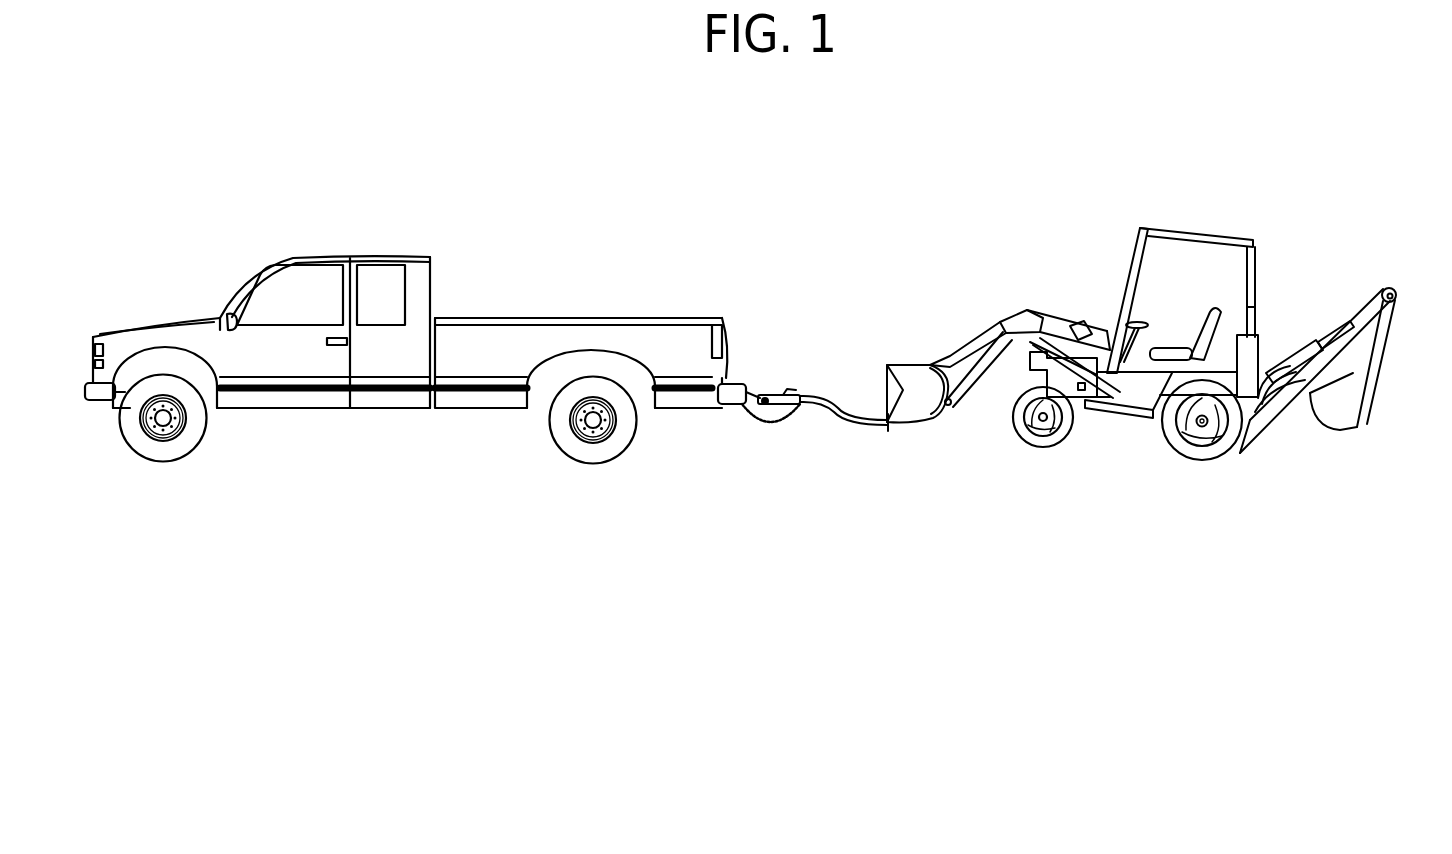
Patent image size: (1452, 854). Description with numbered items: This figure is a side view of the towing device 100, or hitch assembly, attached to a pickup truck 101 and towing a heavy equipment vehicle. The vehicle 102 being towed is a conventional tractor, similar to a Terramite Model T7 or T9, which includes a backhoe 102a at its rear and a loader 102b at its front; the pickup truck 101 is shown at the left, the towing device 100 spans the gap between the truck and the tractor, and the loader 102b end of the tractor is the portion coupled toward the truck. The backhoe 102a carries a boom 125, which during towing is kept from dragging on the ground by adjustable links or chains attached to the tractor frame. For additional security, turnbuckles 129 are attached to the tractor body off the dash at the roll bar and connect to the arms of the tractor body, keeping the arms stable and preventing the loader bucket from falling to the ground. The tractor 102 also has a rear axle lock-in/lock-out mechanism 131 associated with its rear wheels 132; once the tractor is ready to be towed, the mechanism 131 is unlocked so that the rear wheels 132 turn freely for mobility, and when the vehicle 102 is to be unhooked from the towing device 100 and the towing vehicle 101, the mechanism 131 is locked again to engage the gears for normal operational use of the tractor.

The towing device 100 is at (862, 435).
The pickup truck 101 is at (362, 238).
The vehicle to be towed 102 is at (1202, 226).
The backhoe 102a is at (1369, 274).
The loader 102b is at (910, 347).
The boom 125 is at (1308, 350).
The turnbuckles 129 is at (1080, 325).
The rear axle lock-in/lock-out mechanism 131 is at (1203, 428).
The rear wheels 132 is at (1219, 465).